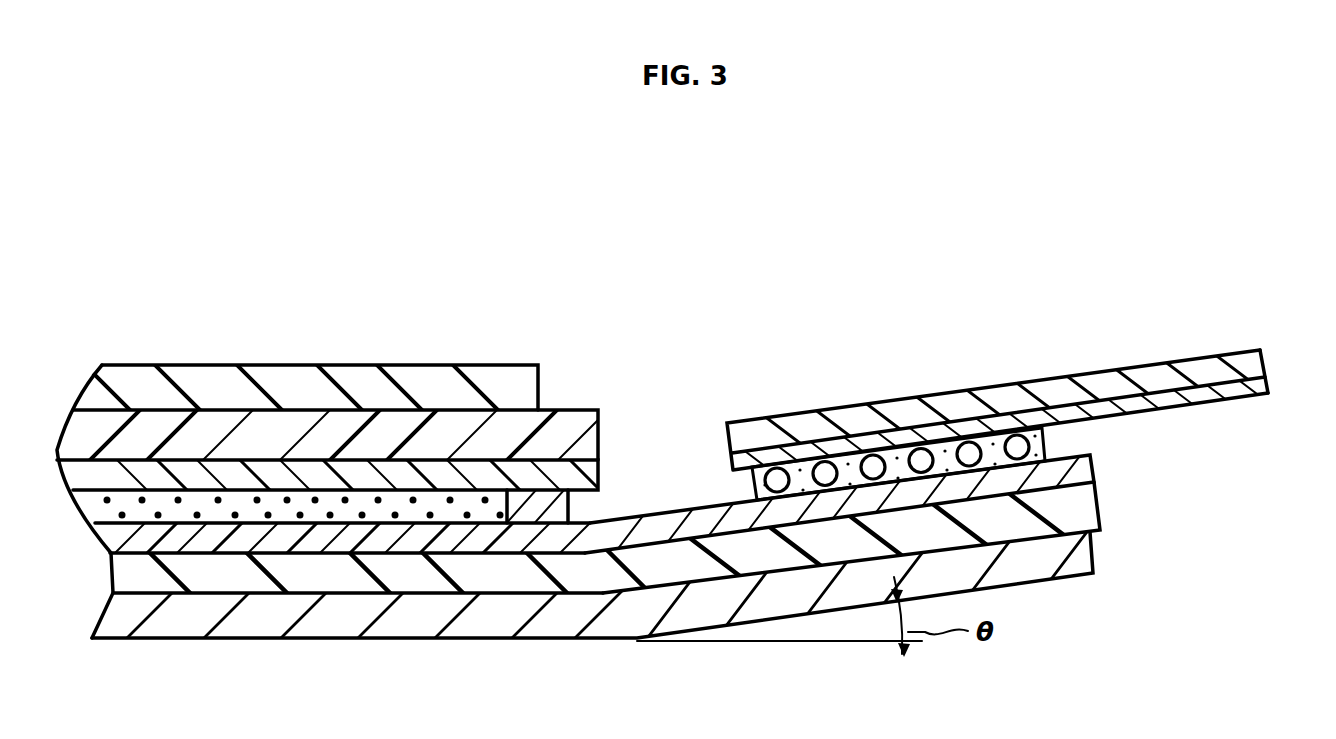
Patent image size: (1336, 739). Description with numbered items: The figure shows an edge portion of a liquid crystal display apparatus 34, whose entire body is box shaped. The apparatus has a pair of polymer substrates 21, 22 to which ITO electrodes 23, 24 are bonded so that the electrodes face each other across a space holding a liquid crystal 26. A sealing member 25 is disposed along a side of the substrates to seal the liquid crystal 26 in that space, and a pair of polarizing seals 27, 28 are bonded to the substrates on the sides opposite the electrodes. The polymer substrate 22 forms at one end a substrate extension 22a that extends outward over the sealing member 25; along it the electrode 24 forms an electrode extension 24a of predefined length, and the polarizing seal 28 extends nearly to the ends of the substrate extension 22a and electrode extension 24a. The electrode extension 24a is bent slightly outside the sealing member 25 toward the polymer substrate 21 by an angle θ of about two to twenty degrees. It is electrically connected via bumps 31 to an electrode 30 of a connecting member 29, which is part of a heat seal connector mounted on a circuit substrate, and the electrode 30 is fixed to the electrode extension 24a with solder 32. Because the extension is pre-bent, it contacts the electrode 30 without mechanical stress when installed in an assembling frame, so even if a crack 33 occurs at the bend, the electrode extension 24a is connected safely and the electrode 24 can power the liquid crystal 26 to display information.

The polymer substrate 21 is at (345, 430).
The polymer substrate 22 is at (405, 584).
The substrate extension 22a is at (1100, 510).
The ITO electrode 23 is at (598, 465).
The ITO electrode 24 is at (215, 542).
The electrode extension 24a is at (1097, 467).
The sealing member 25 is at (570, 510).
The liquid crystal 26 is at (245, 497).
The polarizing seal 27 is at (432, 378).
The polarizing seal 28 is at (453, 627).
The connecting member 29 is at (893, 393).
The electrode 30 is at (1268, 388).
The bumps 31 is at (777, 480).
The solder 32 is at (1046, 447).
The crack 33 is at (573, 568).
The liquid crystal display apparatus 34 is at (802, 236).